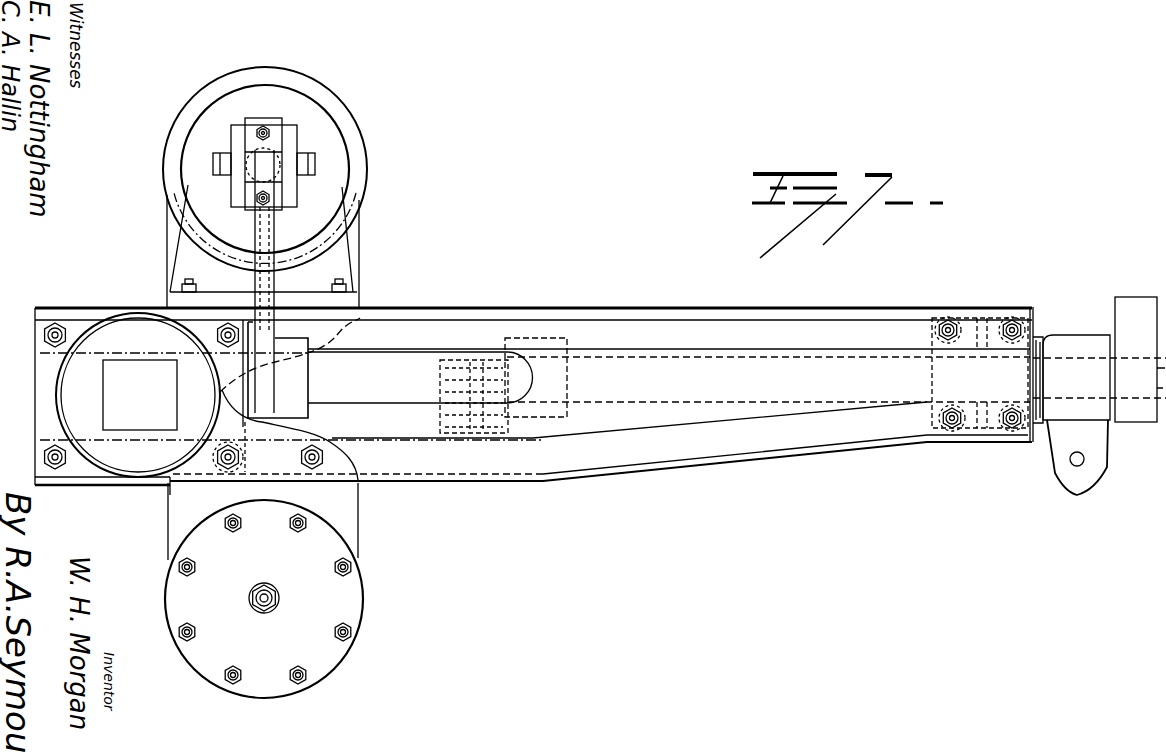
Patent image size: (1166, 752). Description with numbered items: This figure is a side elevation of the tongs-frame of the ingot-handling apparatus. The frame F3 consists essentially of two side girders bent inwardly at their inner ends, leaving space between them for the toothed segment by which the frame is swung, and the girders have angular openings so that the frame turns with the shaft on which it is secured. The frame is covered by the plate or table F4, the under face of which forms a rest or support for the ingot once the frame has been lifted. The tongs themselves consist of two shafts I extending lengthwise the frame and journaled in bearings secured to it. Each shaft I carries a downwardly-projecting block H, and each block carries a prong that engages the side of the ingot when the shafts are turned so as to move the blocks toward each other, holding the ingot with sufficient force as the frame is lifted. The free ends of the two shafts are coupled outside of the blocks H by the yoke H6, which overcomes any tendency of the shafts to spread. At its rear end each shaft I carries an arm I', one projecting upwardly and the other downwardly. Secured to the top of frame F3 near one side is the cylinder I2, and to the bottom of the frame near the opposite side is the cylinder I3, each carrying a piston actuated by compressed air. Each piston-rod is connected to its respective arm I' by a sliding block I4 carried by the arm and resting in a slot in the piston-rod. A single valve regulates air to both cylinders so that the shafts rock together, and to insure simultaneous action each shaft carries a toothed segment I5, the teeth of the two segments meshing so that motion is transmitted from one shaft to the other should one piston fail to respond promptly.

The shaft I is at (437, 377).
The arm I' is at (278, 284).
The cylinder I2 is at (279, 187).
The cylinder I3 is at (264, 590).
The sliding block I4 is at (250, 183).
The toothed segment I5 is at (448, 428).
The frame F3 is at (607, 455).
The plate or table F4 is at (647, 312).
The block H is at (1099, 415).
The yoke H6 is at (1140, 359).